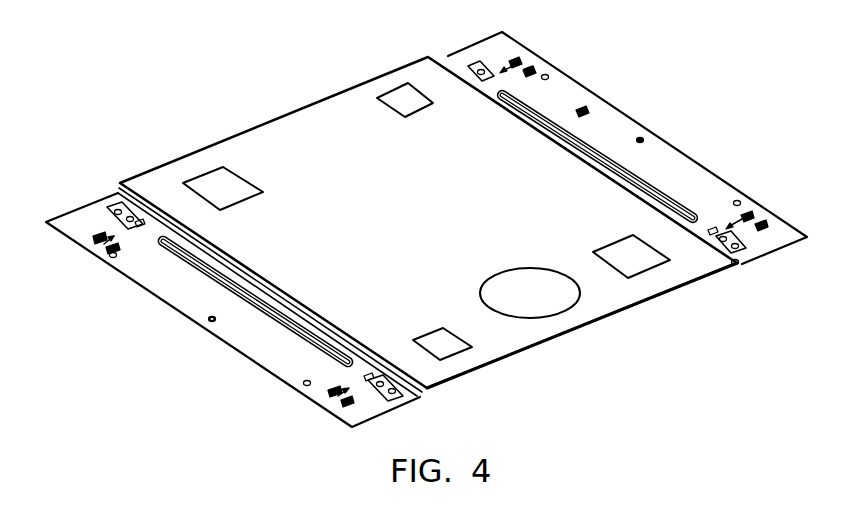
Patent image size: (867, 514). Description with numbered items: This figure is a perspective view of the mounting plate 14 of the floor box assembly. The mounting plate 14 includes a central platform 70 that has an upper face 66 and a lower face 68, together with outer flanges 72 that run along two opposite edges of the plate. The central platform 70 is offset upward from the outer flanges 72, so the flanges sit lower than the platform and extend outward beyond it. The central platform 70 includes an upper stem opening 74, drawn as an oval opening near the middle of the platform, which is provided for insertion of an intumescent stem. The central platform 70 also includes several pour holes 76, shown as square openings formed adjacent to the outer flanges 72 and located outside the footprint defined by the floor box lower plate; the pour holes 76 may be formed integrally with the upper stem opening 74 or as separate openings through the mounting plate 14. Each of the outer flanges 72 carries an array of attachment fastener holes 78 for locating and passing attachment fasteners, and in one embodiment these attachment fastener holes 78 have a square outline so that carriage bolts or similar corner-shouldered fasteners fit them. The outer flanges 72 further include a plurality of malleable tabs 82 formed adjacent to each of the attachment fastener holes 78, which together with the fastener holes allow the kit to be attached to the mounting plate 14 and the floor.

The mounting plate 14 is at (616, 61).
The upper face 66 is at (308, 118).
The lower face 68 is at (545, 343).
The central platform 70 is at (475, 203).
The outer flanges 72 is at (177, 295).
The upper stem opening 74 is at (500, 277).
The pour holes 76 is at (424, 104).
The attachment fastener holes 78 is at (529, 67).
The malleable tabs 82 is at (483, 83).